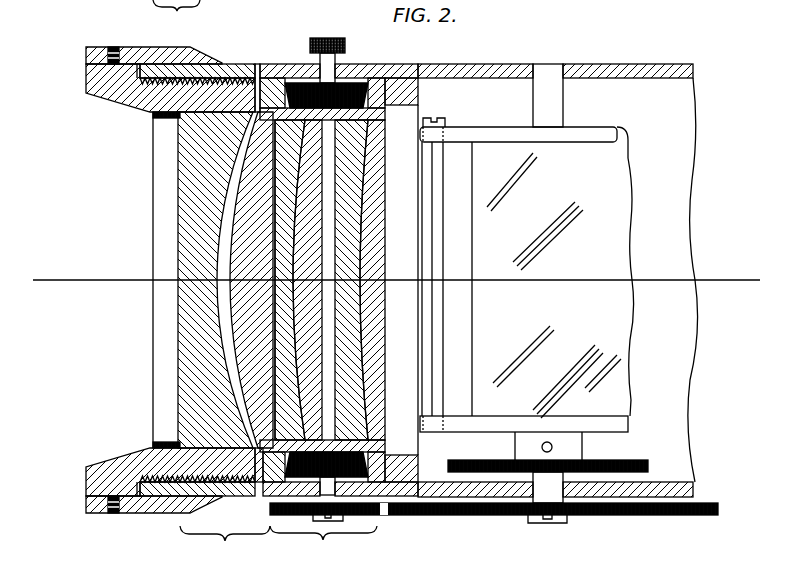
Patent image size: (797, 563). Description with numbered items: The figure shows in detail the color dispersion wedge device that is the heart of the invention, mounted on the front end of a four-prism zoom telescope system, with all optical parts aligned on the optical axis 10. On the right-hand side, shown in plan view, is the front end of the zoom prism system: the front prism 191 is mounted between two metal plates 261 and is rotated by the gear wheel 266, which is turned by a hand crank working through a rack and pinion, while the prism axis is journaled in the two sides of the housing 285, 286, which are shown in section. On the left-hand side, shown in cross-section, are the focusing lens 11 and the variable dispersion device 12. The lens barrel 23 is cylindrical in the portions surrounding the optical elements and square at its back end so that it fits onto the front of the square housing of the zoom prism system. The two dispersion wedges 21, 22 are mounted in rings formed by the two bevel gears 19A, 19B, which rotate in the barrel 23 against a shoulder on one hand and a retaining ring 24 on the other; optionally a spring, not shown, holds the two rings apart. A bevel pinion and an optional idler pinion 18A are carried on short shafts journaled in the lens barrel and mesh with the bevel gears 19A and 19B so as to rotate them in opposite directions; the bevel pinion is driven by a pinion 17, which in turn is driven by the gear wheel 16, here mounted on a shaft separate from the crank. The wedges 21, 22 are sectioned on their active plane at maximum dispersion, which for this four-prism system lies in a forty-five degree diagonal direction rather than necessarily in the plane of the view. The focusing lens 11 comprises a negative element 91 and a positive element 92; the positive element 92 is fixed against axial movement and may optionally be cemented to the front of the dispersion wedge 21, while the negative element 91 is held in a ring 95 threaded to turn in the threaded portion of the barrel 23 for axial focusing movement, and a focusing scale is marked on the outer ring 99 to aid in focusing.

The optical axis 10 is at (58, 280).
The focusing lens 11 is at (195, 280).
The dispersion wedges 12 is at (265, 280).
The gear wheel 16 is at (493, 515).
The pinion 17 is at (378, 507).
The idler pinion 18A is at (348, 88).
The bevel gear 19A is at (282, 82).
The bevel gear 19B is at (378, 80).
The dispersion wedge 21 is at (325, 190).
The dispersion wedge 22 is at (362, 230).
The lens barrel 23 is at (258, 63).
The retaining ring 24 is at (255, 494).
The negative element 91 is at (193, 205).
The positive element 92 is at (248, 302).
The ring 95 is at (87, 105).
The outer ring 99 is at (135, 47).
The front prism 191 is at (610, 164).
The metal plates 261 is at (585, 133).
The gear wheel 266 is at (605, 462).
The housing side 285 is at (590, 64).
The housing side 286 is at (690, 488).